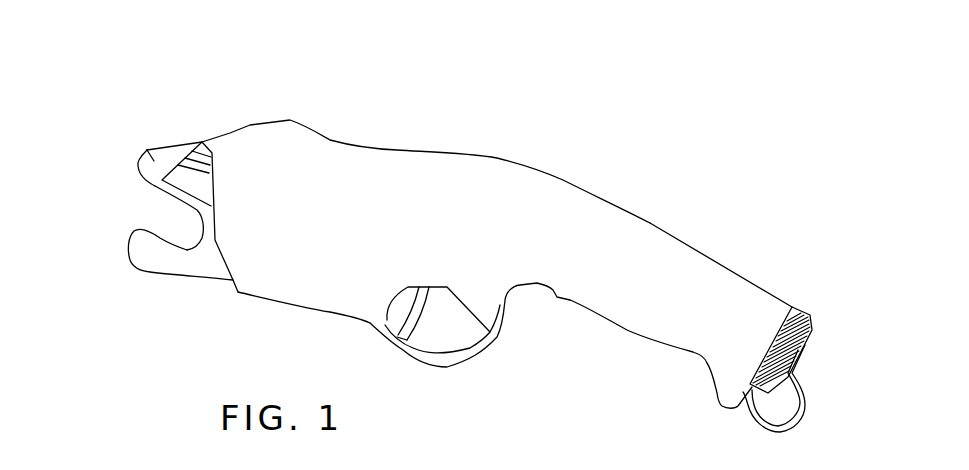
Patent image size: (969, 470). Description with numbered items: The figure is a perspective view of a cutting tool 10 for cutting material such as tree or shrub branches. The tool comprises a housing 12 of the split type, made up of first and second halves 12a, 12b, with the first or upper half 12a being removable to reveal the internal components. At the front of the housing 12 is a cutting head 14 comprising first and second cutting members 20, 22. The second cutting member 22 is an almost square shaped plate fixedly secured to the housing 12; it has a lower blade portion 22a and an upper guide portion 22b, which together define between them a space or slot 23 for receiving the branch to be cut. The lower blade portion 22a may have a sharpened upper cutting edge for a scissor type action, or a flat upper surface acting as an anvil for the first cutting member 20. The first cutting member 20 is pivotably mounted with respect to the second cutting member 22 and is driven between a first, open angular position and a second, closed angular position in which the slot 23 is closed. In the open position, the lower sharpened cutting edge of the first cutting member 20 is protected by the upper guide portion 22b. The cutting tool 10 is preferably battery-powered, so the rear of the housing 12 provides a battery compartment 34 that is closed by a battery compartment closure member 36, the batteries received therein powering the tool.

The cutting tool 10 is at (469, 229).
The housing 12 is at (469, 229).
The first half of housing 12a is at (398, 221).
The second half of housing 12b is at (712, 250).
The cutting head 14 is at (157, 192).
The first cutting member 20 is at (187, 177).
The second cutting member 22 is at (136, 215).
The lower blade portion 22a is at (157, 257).
The upper guide portion 22b is at (147, 150).
The space or slot 23 is at (185, 226).
The battery compartment 34 is at (718, 313).
The battery compartment closure member 36 is at (810, 315).